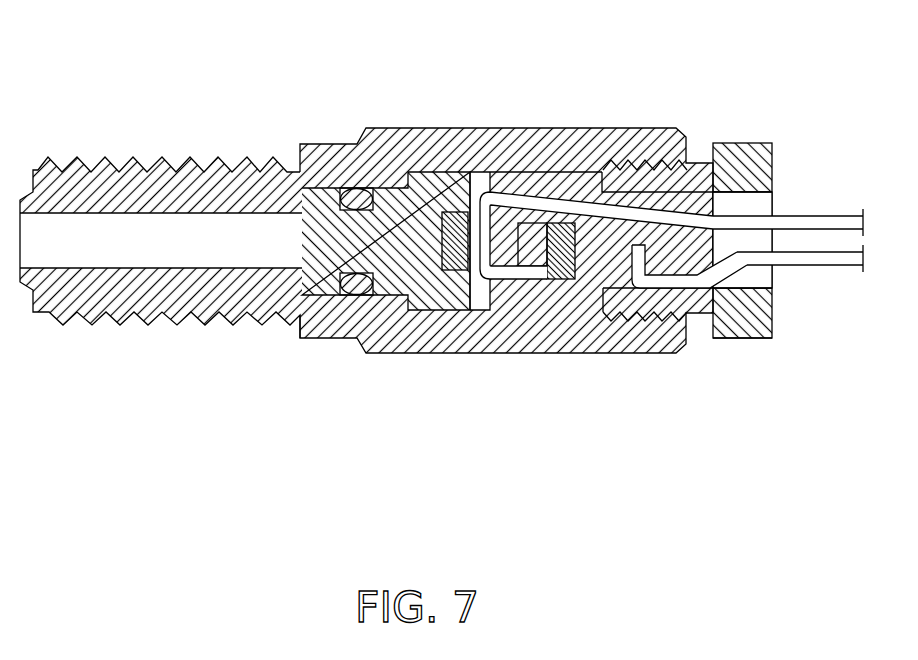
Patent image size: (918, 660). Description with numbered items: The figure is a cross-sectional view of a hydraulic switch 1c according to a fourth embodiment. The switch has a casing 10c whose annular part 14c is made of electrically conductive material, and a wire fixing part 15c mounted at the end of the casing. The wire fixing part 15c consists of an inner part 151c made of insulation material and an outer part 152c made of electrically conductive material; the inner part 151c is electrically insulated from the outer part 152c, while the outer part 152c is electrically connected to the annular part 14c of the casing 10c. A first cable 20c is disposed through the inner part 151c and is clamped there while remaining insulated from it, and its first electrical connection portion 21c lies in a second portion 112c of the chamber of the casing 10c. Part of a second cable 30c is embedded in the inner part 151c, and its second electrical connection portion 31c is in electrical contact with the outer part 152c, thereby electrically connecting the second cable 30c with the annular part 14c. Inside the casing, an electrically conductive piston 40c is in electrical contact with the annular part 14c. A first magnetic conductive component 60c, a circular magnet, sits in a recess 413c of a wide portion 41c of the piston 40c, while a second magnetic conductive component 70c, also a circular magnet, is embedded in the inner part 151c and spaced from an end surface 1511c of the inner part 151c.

The hydraulic switch 1c is at (107, 93).
The casing 10c is at (336, 110).
The annular part 14c is at (530, 147).
The wire fixing part 15c is at (744, 362).
The inner part 151c is at (587, 187).
The outer part 152c is at (742, 160).
The second portion 112c is at (478, 184).
The end surface 1511c is at (486, 307).
The first cable 20c is at (826, 222).
The first electrical connection portion 21c is at (485, 252).
The second cable 30c is at (840, 258).
The second electrical connection portion 31c is at (668, 282).
The electrically conductive piston 40c is at (282, 238).
The wide portion 41c is at (433, 280).
The recess 413c is at (449, 250).
The first magnetic conductive component 60c is at (456, 212).
The second magnetic conductive component 70c is at (560, 270).